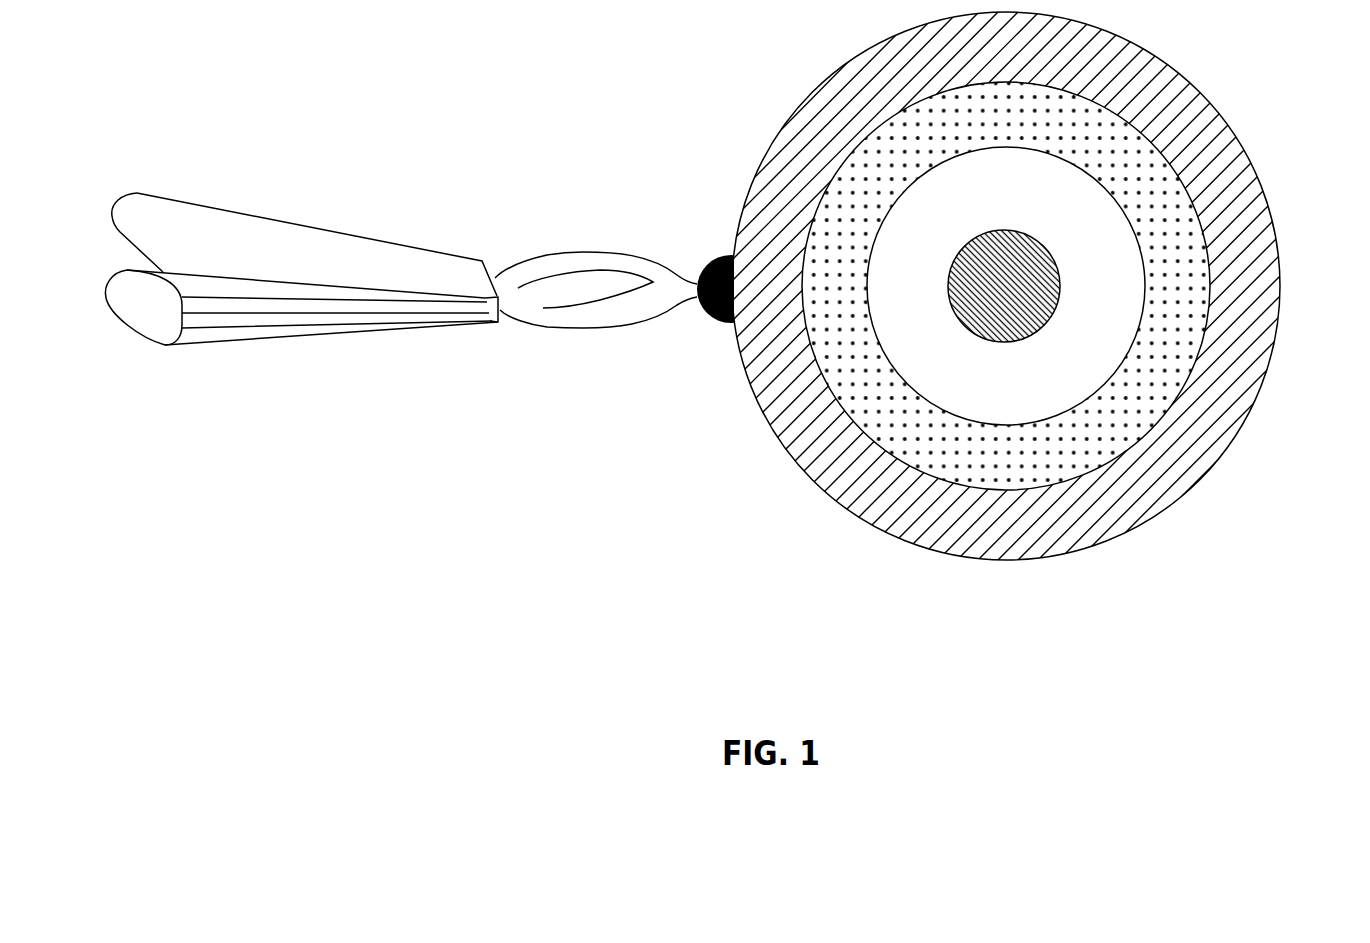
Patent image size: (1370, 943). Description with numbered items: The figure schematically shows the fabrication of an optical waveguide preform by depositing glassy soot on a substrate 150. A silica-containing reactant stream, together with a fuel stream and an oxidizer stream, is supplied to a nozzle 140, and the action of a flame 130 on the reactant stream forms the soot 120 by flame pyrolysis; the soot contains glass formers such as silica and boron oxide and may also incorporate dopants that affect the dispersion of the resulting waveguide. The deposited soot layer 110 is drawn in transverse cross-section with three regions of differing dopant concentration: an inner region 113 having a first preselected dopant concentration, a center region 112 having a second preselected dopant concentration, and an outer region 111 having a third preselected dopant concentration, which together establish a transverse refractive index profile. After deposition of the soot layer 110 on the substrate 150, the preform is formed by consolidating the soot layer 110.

The soot layer 110 is at (1041, 328).
The outer region 111 is at (1150, 485).
The center region 112 is at (1085, 440).
The inner region 113 is at (1027, 377).
The soot 120 is at (715, 323).
The flame 130 is at (643, 258).
The nozzle 140 is at (287, 219).
The substrate 150 is at (985, 300).